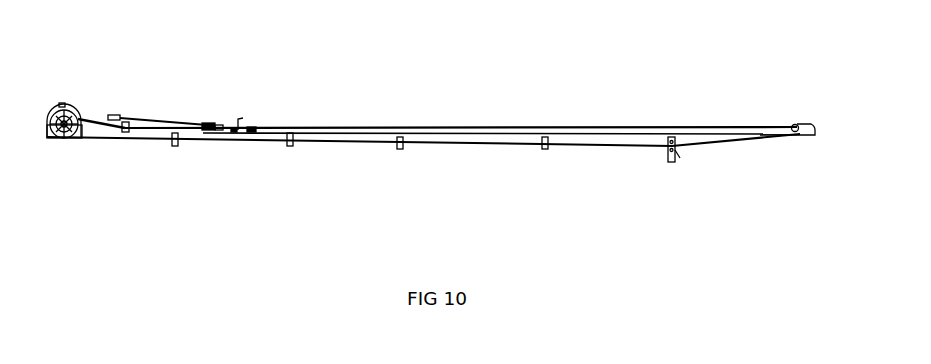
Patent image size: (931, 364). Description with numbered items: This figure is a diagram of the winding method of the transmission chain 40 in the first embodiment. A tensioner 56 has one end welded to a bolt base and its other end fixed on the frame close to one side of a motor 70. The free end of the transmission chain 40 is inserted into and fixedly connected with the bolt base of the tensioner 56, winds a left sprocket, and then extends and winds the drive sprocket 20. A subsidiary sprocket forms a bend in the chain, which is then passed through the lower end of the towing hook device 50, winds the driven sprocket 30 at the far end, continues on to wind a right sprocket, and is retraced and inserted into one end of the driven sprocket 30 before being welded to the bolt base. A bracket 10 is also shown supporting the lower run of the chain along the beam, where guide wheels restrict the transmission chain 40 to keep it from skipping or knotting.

The mounting bracket 10 is at (673, 158).
The drive sprocket 20 is at (62, 133).
The driven sprocket 30 is at (791, 127).
The transmission chain 40 is at (353, 127).
The towing hook device 50 is at (225, 120).
The tensioner 56 is at (118, 112).
The motor 70 is at (73, 108).